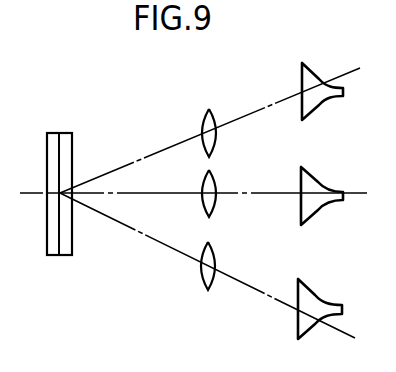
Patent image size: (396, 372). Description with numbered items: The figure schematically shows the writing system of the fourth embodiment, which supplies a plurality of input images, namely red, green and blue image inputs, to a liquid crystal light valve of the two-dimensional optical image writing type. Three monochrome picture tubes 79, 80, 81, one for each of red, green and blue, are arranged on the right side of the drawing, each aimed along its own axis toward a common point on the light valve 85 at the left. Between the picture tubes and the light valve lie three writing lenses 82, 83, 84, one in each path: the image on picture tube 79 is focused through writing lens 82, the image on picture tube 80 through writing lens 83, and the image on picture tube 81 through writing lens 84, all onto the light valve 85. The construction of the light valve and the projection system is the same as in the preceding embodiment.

The monochrome picture tube 79 is at (312, 67).
The monochrome picture tube 80 is at (314, 175).
The monochrome picture tube 81 is at (313, 286).
The writing lens 82 is at (212, 113).
The writing lens 83 is at (211, 174).
The writing lens 84 is at (211, 251).
The light valve 85 is at (65, 133).